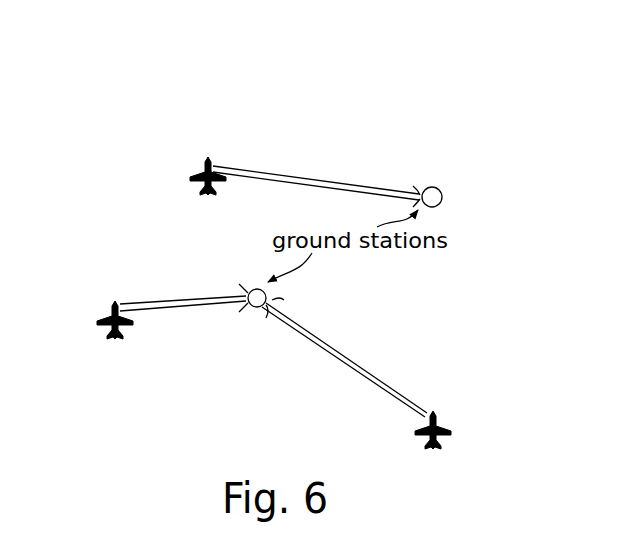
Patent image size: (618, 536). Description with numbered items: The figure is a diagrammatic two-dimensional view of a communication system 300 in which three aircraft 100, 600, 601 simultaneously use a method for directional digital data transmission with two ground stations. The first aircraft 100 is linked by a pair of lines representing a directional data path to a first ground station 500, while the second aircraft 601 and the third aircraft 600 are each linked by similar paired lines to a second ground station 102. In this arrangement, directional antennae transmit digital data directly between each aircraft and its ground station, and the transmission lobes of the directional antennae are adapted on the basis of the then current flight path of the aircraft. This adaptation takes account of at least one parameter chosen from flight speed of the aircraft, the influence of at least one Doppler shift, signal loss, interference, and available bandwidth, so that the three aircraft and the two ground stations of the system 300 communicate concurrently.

The communication system 300 is at (468, 108).
The aircraft 100 is at (205, 170).
The ground station 500 is at (442, 196).
The aircraft 601 is at (103, 310).
The ground station 102 is at (268, 293).
The aircraft 600 is at (440, 414).